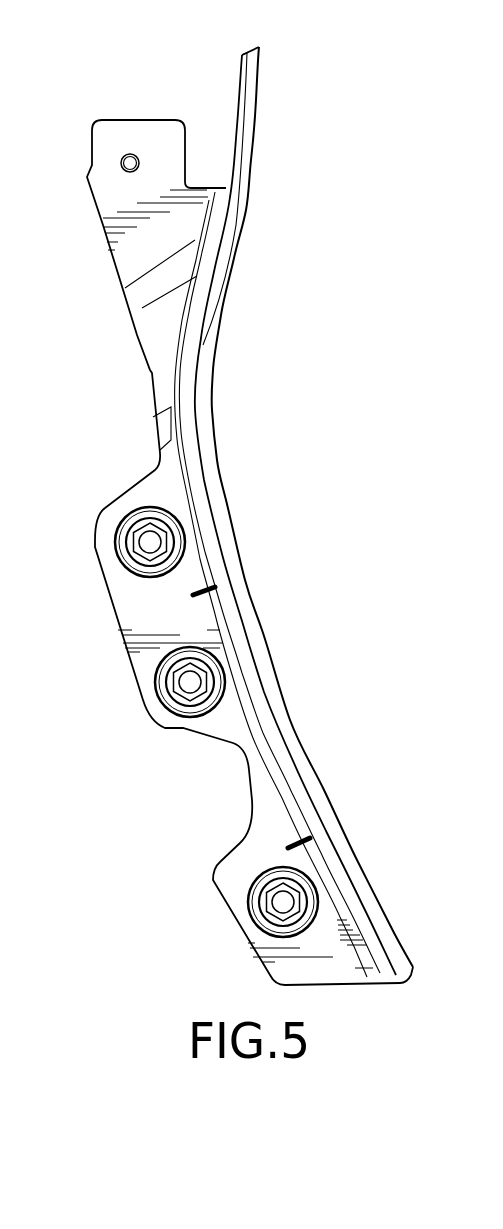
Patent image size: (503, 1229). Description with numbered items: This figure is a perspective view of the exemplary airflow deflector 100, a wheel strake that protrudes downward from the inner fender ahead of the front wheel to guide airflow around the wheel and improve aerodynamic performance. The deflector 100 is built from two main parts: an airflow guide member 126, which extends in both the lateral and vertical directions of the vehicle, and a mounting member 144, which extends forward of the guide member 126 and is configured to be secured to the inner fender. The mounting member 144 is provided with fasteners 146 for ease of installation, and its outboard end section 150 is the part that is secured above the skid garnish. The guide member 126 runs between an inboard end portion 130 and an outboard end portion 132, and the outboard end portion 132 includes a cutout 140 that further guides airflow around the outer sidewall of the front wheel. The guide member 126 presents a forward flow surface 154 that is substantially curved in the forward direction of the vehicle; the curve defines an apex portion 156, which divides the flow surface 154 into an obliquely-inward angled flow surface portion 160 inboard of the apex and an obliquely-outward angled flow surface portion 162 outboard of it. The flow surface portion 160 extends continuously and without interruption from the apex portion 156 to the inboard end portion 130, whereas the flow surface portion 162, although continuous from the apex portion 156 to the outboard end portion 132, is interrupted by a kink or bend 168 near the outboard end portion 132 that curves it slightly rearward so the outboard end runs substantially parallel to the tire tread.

The airflow deflector 100 is at (112, 808).
The airflow guide member 126 is at (260, 623).
The inboard end portion 130 is at (377, 890).
The outboard end portion 132 is at (242, 223).
The cutout 140 is at (232, 118).
The mounting member 144 is at (128, 588).
The fasteners 146 is at (190, 682).
The outboard end section 150 is at (110, 197).
The forward flow surface 154 is at (277, 730).
The apex portion 156 is at (197, 397).
The obliquely-inward angled flow surface portion 160 is at (300, 800).
The obliquely-outward angled flow surface portion 162 is at (202, 300).
The bend 168 is at (250, 190).